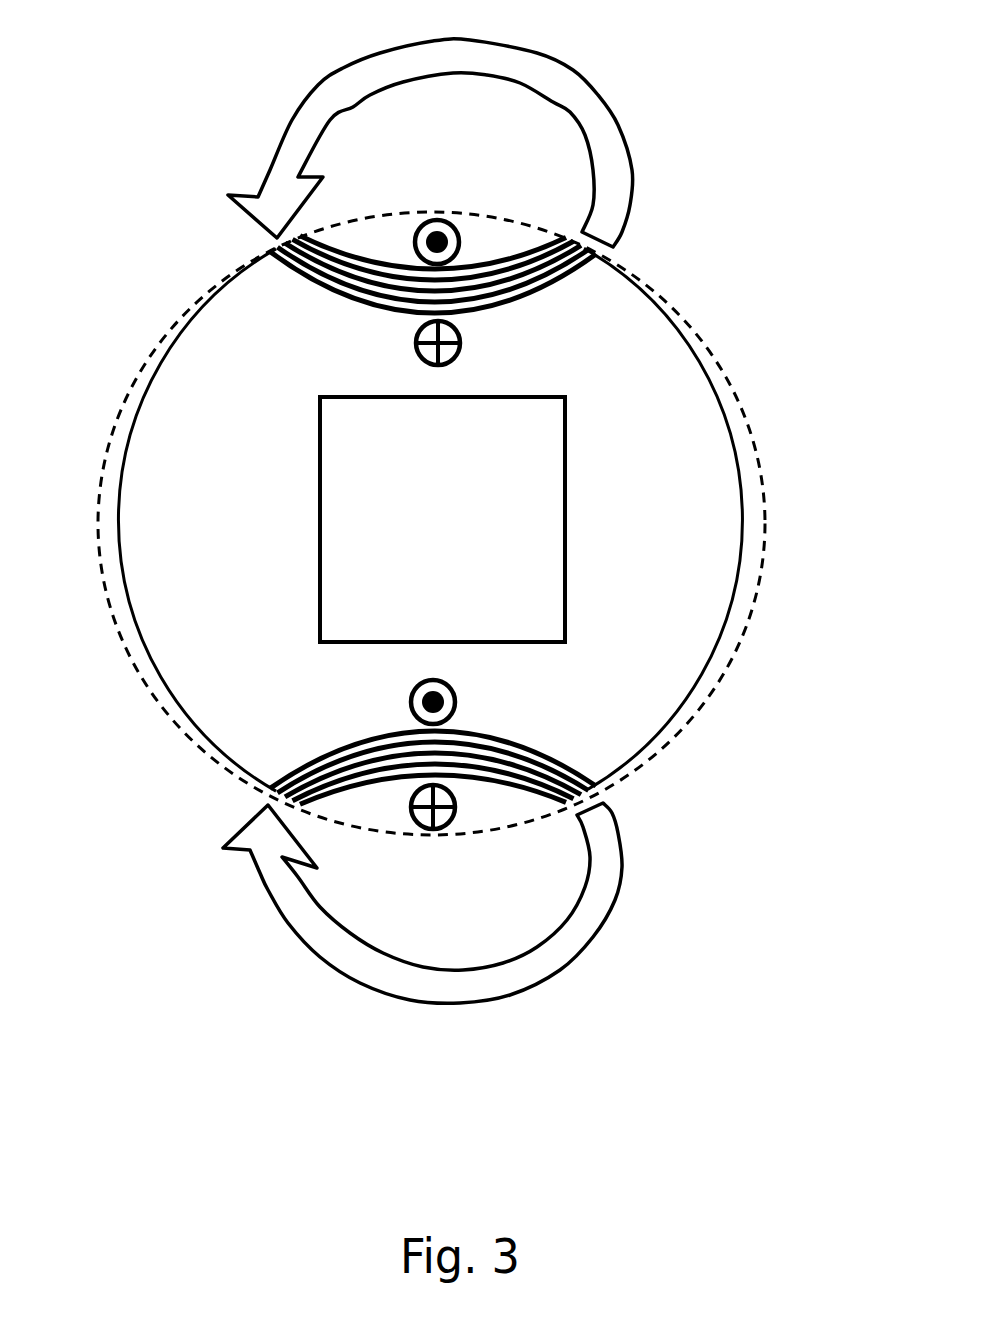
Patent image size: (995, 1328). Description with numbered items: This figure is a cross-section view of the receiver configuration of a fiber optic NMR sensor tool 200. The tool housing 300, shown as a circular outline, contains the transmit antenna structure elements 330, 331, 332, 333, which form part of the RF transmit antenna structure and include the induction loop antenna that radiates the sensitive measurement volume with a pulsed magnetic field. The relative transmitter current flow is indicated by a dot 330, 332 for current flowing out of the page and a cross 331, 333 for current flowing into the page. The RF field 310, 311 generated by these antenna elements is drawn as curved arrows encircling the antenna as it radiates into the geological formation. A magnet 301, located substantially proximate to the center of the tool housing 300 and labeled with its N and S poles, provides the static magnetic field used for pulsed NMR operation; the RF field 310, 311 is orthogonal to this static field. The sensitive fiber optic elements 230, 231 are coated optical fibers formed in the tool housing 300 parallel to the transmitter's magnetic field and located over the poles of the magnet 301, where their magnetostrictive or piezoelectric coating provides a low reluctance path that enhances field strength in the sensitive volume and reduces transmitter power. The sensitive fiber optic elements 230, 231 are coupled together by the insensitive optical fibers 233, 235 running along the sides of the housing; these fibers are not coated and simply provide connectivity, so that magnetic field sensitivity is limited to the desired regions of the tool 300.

The fiber optic NMR sensor tool 200 is at (742, 153).
The tool housing 300 is at (138, 680).
The magnet 301 is at (320, 540).
The sensitive fiber optic element 230 is at (350, 735).
The sensitive fiber optic element 231 is at (367, 312).
The insensitive optical fiber 233 is at (130, 443).
The insensitive optical fiber 235 is at (732, 443).
The RF field 310 is at (542, 57).
The RF field 311 is at (578, 960).
The transmit antenna structure element 330 is at (435, 218).
The transmit antenna structure element 331 is at (462, 338).
The transmit antenna structure element 332 is at (457, 700).
The transmit antenna structure element 333 is at (457, 812).